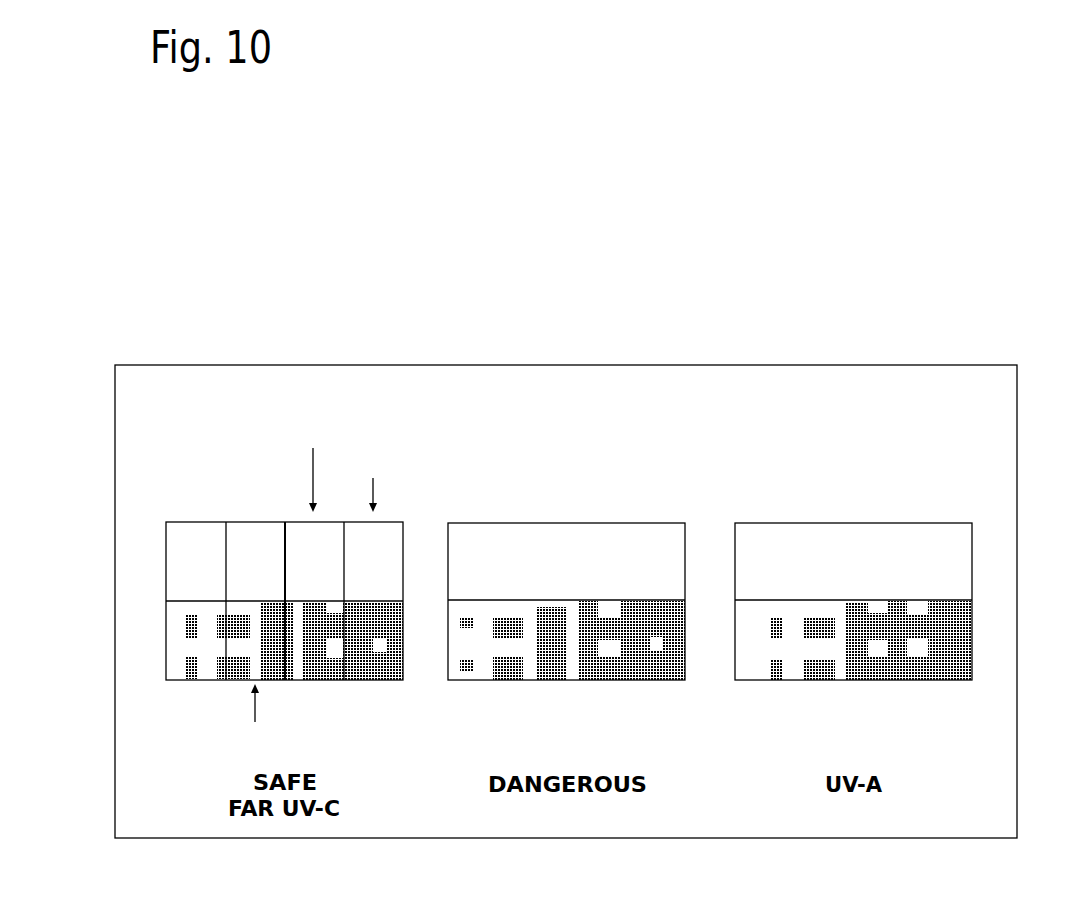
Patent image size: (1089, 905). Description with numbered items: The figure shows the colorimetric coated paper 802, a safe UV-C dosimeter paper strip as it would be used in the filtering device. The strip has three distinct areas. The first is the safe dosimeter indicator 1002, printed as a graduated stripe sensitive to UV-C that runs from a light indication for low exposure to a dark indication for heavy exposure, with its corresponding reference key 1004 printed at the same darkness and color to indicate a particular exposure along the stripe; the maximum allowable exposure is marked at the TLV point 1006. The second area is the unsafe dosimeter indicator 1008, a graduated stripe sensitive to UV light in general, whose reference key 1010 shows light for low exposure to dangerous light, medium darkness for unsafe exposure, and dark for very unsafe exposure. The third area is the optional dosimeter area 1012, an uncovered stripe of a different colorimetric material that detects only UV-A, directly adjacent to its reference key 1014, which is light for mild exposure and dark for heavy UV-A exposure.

The colorimetric coated paper 802 is at (797, 175).
The safe dosimeter indicator 1002 is at (255, 535).
The reference key 1004 is at (178, 633).
The TLV point 1006 is at (225, 717).
The unsafe dosimeter indicator 1008 is at (567, 532).
The reference key 1010 is at (464, 645).
The dosimeter area 1012 is at (853, 533).
The reference key 1014 is at (752, 645).